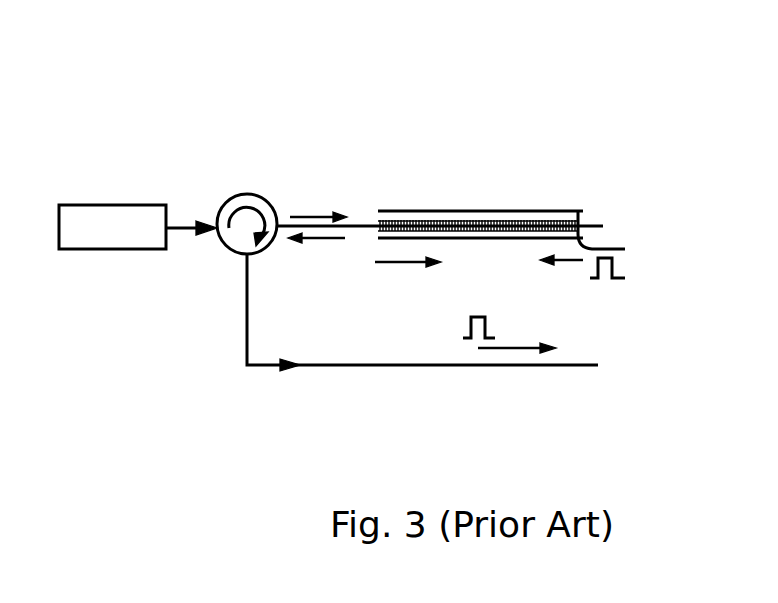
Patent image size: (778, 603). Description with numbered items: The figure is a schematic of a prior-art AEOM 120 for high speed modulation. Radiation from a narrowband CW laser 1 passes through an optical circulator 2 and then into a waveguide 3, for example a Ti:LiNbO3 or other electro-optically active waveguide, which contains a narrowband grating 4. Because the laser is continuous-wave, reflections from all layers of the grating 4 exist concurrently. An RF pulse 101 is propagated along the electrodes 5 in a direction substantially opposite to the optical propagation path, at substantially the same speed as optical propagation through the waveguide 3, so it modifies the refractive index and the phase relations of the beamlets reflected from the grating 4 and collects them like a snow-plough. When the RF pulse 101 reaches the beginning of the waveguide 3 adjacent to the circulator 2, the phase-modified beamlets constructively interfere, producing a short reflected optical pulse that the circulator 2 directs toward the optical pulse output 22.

The AEOM 120 is at (80, 78).
The narrowband CW laser 1 is at (137, 204).
The optical circulator 2 is at (260, 194).
The waveguide 3 is at (359, 213).
The narrowband grating 4 is at (465, 205).
The electrodes 5 is at (533, 198).
The RF pulse 101 is at (638, 273).
The optical pulses output 22 is at (432, 312).